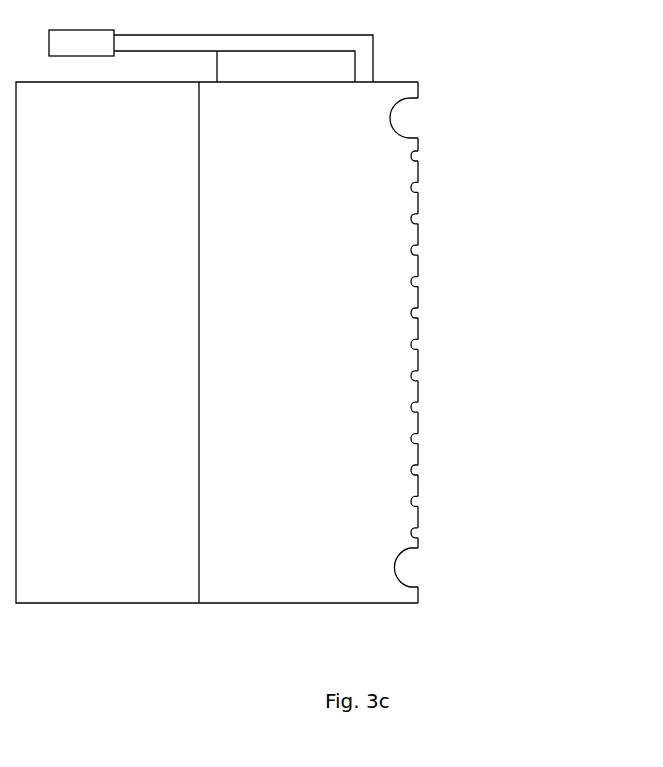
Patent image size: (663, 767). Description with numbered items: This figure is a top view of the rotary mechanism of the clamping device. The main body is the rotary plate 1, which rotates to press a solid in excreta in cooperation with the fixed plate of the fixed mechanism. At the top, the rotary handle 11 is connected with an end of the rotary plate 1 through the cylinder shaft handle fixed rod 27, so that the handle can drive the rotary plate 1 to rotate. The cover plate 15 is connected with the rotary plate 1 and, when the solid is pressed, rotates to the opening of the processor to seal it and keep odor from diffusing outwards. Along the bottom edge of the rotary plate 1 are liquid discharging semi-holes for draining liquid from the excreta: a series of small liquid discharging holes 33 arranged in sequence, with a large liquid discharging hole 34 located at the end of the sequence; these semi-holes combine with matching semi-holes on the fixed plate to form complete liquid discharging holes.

The rotary plate 1 is at (142, 188).
The rotary handle 11 is at (87, 36).
The cover plate 15 is at (277, 370).
The cylinder shaft handle fixed rod 27 is at (207, 50).
The small liquid discharging hole 33 is at (416, 158).
The large liquid discharging hole 34 is at (407, 118).